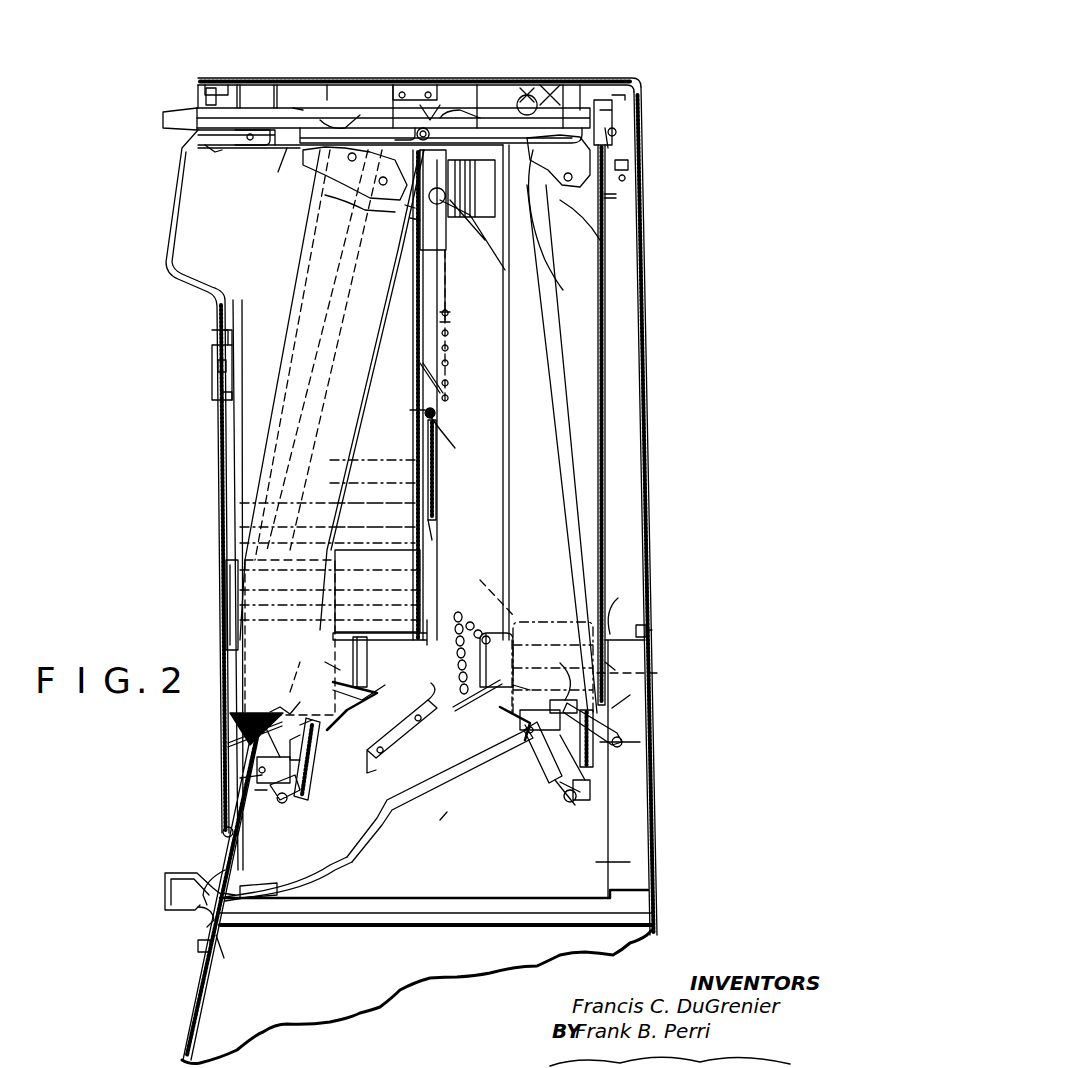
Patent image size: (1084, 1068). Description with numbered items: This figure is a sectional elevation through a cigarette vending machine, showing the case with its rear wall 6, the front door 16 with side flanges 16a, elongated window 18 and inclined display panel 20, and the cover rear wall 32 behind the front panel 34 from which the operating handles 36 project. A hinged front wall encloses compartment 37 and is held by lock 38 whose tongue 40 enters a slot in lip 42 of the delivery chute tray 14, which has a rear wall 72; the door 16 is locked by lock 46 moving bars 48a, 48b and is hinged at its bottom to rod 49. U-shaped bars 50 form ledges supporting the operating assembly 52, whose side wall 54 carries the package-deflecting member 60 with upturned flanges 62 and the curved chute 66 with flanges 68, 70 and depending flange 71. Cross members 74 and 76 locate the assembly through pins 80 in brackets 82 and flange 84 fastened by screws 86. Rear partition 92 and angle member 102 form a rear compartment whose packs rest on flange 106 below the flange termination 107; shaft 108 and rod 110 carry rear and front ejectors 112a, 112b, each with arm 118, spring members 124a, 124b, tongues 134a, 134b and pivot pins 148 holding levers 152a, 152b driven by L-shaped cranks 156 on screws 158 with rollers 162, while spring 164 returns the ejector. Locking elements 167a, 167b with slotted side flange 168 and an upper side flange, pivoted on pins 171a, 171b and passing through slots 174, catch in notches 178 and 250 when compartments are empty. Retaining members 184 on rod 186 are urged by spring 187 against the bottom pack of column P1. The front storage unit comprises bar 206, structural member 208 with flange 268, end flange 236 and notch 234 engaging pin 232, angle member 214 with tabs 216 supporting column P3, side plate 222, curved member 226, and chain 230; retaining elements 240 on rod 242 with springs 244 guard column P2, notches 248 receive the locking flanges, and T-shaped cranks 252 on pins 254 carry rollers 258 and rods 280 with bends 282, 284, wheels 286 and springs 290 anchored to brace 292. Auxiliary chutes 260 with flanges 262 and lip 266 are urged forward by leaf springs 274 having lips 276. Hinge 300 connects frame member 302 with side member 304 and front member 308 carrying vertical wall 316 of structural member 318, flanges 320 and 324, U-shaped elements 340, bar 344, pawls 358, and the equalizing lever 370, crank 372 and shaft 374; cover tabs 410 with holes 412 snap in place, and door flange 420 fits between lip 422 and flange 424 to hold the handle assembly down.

The rear wall 6 is at (648, 462).
The delivery chute tray 14 is at (165, 896).
The front door 16 is at (222, 489).
The side flanges 16a is at (222, 446).
The elongated window 18 is at (233, 727).
The inclined display panel 20 is at (168, 262).
The rear wall 32 is at (648, 96).
The front panel 34 is at (205, 96).
The operating handles 36 is at (163, 120).
The compartment 37 is at (322, 1022).
The lock 38 is at (198, 946).
The tongue 40 is at (216, 935).
The lip 42 is at (200, 917).
The key-operated lock 46 is at (212, 371).
The bar 48a is at (224, 338).
The bar 48b is at (222, 397).
The rod 49 is at (224, 832).
The U-shaped bars 50 is at (635, 905).
The operating assembly 52 is at (612, 838).
The side wall 54 is at (630, 862).
The package-deflecting member 60 is at (405, 742).
The upturned flanges 62 is at (410, 697).
The chute 66 is at (335, 860).
The flange 68 is at (425, 812).
The flange 70 is at (277, 890).
The depending flange 71 is at (225, 893).
The rear wall 72 is at (208, 878).
The cross member 74 is at (616, 196).
The cross member 76 is at (608, 665).
The pins 80 is at (628, 163).
The brackets 82 is at (625, 177).
The flange 84 is at (622, 605).
The screws 86 is at (652, 630).
The partition 92 is at (503, 502).
The angle member 102 is at (518, 652).
The horizontal flange 106 is at (545, 725).
The termination of forward flanges 107 is at (540, 683).
The shaft 108 is at (590, 802).
The rod 110 is at (297, 795).
The rear ejector elements 112a is at (560, 795).
The front ejector elements 112b is at (318, 770).
The arm 118 is at (585, 780).
The spring members 124a is at (580, 792).
The spring members 124b is at (240, 778).
The tongue 134a is at (505, 722).
The tongue 134b is at (347, 712).
The pivot pins 148 is at (545, 770).
The levers 152a is at (606, 370).
The levers 152b is at (300, 247).
The L-shaped cranks 156 is at (563, 290).
The screws 158 is at (600, 240).
The roller 162 is at (612, 105).
The spring 164 is at (600, 716).
The locking element 167a is at (630, 695).
The locking element 167b is at (228, 745).
The side flange 168 is at (593, 735).
The pivot pins 171a is at (653, 672).
The pivot pins 171b is at (306, 677).
The slots 174 is at (560, 663).
The notches 178 is at (640, 742).
The article-retaining members 184 is at (478, 697).
The rod 186 is at (490, 607).
The spring 187 is at (468, 665).
The bar 206 is at (226, 626).
The structural member 208 is at (447, 200).
The angle member 214 is at (395, 640).
The tabs 216 is at (325, 662).
The side plate 222 is at (262, 790).
The curved member 226 is at (295, 792).
The chain 230 is at (450, 364).
The pins 232 is at (405, 205).
The notch 234 is at (505, 258).
The end flange 236 is at (410, 220).
The package-retaining elements 240 is at (367, 690).
The rod 242 is at (380, 632).
The springs 244 is at (335, 642).
The notches 248 is at (290, 712).
The notches 250 is at (257, 760).
The T-shaped cranks 252 is at (335, 170).
The pins 254 is at (345, 195).
The rollers 258 is at (470, 113).
The auxiliary chute 260 is at (305, 337).
The flanges 262 is at (300, 287).
The overhanging lip 266 is at (460, 138).
The flange 268 is at (447, 156).
The leaf-spring member 274 is at (452, 314).
The projecting lip 276 is at (435, 378).
The rod 280 is at (390, 377).
The rearward bend 282 is at (410, 410).
The transversely extending portion 284 is at (455, 448).
The wheels 286 is at (436, 406).
The tension spring 290 is at (436, 471).
The brace member 292 is at (433, 536).
The hinge 300 is at (616, 128).
The transversely extending member 302 is at (625, 98).
The side member 304 is at (300, 88).
The front member 308 is at (222, 85).
The vertical wall 316 is at (440, 100).
The structural member 318 is at (415, 90).
The horizontal flange 320 is at (472, 100).
The upstanding flange 324 is at (393, 100).
The U-shaped elements 340 is at (430, 105).
The bar 344 is at (300, 106).
The pawl 358 is at (340, 120).
The slidable lever 370 is at (565, 264).
The crank 372 is at (560, 105).
The shaft 374 is at (530, 90).
The depending tabs 410 is at (287, 148).
The hole 412 is at (270, 135).
The flange 420 is at (198, 140).
The horizontal lip 422 is at (207, 150).
The horizontal flange 424 is at (244, 112).
The column of cigarettes P1 is at (490, 582).
The front column P2 is at (250, 522).
The extra column P3 is at (240, 547).